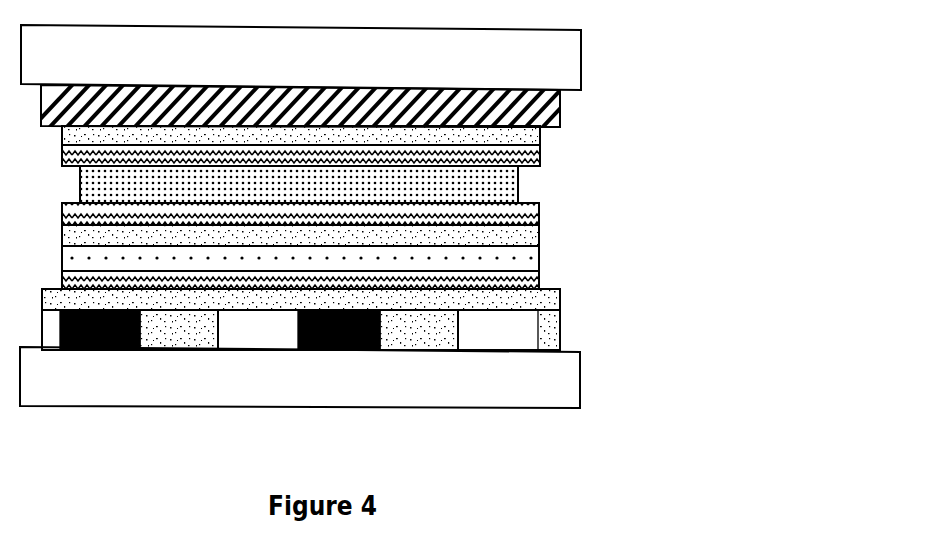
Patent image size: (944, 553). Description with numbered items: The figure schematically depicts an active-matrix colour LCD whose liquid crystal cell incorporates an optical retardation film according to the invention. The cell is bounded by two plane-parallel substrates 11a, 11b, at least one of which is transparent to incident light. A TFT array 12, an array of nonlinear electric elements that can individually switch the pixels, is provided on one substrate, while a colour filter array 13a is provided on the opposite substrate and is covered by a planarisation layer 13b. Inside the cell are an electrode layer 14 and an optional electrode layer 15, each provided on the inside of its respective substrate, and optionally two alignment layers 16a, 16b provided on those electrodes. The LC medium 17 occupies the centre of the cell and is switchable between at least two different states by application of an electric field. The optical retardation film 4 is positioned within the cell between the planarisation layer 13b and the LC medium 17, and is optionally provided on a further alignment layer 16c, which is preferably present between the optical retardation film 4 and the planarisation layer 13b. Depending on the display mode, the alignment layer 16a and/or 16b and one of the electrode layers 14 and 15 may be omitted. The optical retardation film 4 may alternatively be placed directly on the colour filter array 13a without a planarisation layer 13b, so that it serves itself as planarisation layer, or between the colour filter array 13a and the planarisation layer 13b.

The substrate 11a is at (581, 390).
The substrate 11b is at (581, 65).
The TFT array 12 is at (560, 108).
The colour filter array 13a is at (533, 340).
The planarisation layer 13b is at (553, 328).
The electrode layer 14 is at (535, 230).
The electrode layer 15 is at (540, 142).
The alignment layer 16a is at (539, 218).
The alignment layer 16b is at (540, 160).
The alignment layer 16c is at (558, 293).
The LC medium 17 is at (518, 190).
The optical retardation film 4 is at (530, 257).